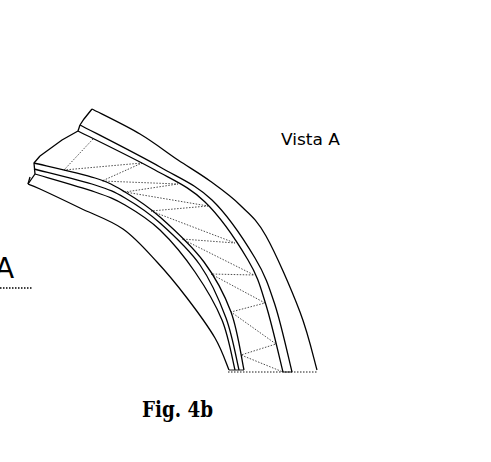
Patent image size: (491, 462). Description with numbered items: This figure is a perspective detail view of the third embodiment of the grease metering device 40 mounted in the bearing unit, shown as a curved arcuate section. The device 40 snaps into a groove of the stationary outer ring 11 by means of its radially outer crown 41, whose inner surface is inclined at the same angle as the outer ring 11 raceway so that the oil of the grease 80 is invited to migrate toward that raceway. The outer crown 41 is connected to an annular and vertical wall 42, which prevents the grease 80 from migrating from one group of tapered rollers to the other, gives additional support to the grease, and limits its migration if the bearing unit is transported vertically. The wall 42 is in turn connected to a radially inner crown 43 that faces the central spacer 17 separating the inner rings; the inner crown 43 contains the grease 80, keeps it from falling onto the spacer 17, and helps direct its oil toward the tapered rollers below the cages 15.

The grease metering device 40 is at (205, 121).
The stationary outer ring 11 is at (178, 161).
The cage 15 is at (15, 147).
The spacer 17 is at (186, 296).
The radially outer crown 41 is at (207, 203).
The annular and vertical wall 42 is at (226, 265).
The radially inner crown 43 is at (132, 200).
The grease 80 is at (266, 357).